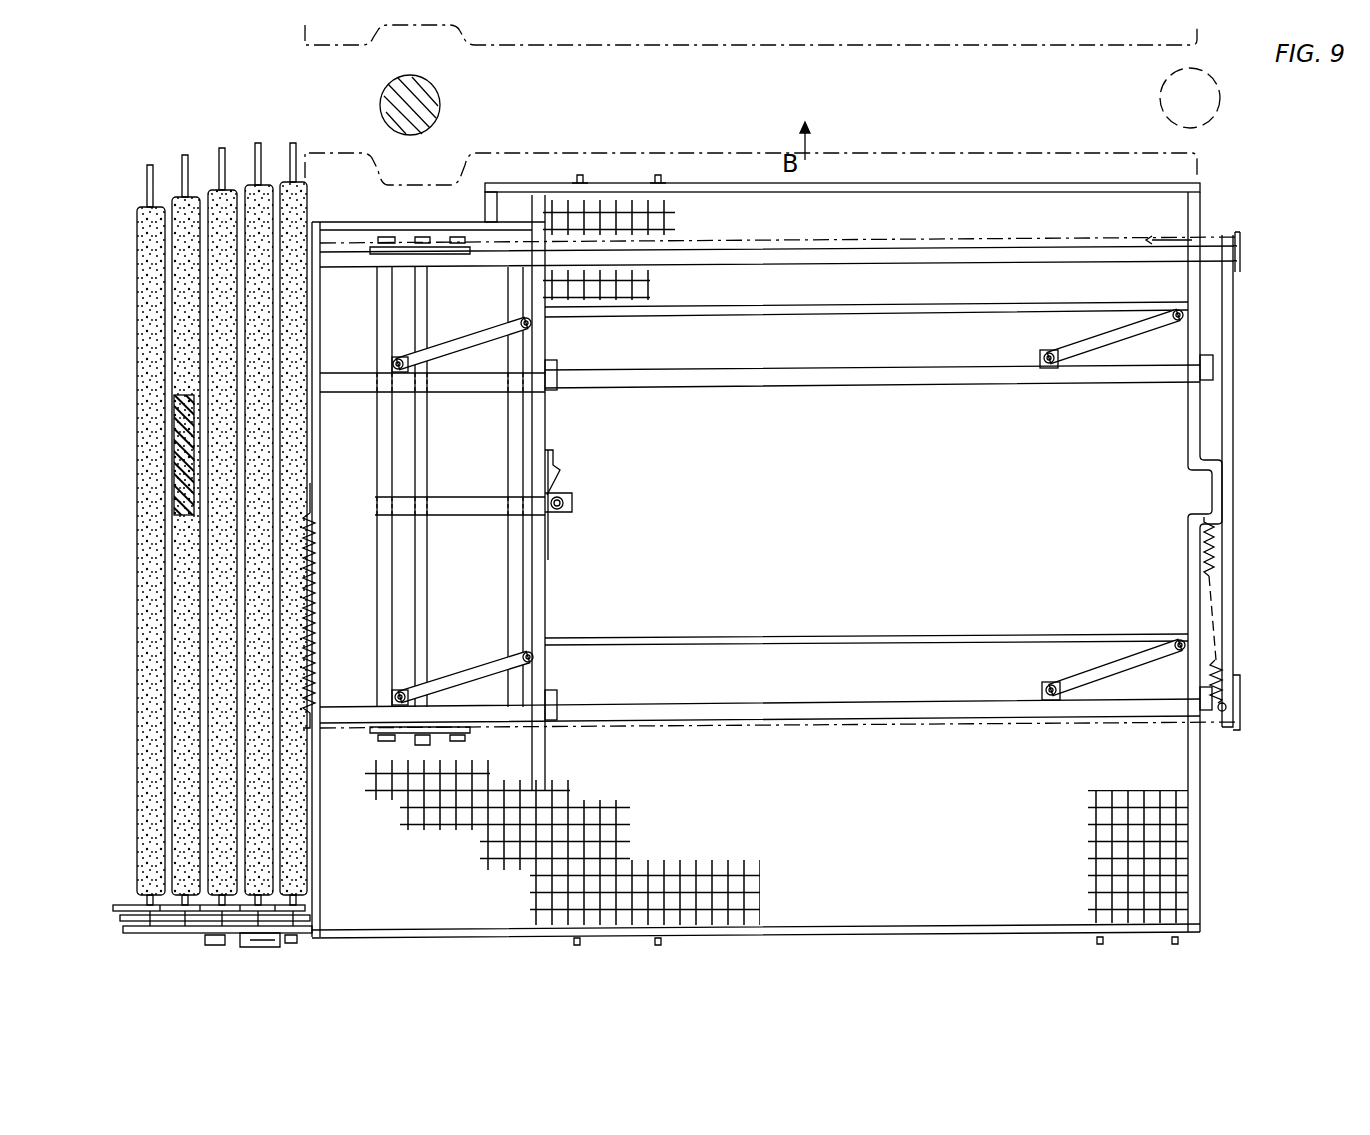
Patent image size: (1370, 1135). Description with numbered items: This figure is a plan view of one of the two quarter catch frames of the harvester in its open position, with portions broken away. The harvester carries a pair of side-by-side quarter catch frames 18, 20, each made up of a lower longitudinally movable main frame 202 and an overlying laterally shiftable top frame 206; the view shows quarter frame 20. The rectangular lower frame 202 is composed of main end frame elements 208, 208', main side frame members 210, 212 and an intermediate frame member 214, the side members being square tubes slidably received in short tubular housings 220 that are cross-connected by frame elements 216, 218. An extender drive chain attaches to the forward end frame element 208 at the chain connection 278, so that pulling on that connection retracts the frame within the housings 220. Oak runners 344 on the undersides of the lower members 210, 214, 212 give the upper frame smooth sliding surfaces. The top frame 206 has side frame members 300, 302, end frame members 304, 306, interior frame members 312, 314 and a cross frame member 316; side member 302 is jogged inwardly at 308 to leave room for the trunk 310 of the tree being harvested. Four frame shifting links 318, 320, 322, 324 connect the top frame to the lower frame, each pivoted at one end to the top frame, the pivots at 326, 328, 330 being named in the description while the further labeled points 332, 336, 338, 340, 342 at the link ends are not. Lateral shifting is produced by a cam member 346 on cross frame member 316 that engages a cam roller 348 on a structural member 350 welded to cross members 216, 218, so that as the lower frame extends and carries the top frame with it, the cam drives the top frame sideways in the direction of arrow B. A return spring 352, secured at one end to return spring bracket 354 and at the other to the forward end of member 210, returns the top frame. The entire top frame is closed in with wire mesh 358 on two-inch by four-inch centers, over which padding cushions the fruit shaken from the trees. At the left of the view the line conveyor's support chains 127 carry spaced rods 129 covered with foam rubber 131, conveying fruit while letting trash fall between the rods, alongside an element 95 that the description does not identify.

The quarter catch frame 18 is at (982, 48).
The quarter catch frame 20 is at (1215, 203).
The support member 95 is at (228, 940).
The conveyor support chain 127 is at (122, 904).
The spaced rods 129 is at (148, 172).
The foam rubber covering 131 is at (183, 172).
The lower longitudinally movable main frame 202 is at (1248, 348).
The laterally shiftable top frame 206 is at (1203, 200).
The main end frame element 208 is at (1271, 481).
The main end frame element 208' is at (428, 579).
The main side frame member 210 is at (1230, 706).
The main side frame member 212 is at (1035, 250).
The intermediate frame member 214 is at (680, 402).
The cross frame element 216 is at (378, 422).
The cross frame element 218 is at (508, 420).
The tubular housing 220 is at (490, 735).
The chain connection 278 is at (1235, 728).
The side frame member 300 is at (1190, 945).
The side frame member 302 is at (1022, 188).
The end frame member 304 is at (312, 488).
The end frame member 306 is at (1202, 892).
The inward jog 308 is at (456, 212).
The tree trunk 310 is at (442, 98).
The interior frame member 312 is at (785, 638).
The interior frame member 314 is at (792, 315).
The cross frame member 316 is at (548, 592).
The frame shifting link 318 is at (1098, 645).
The frame shifting link 320 is at (1097, 368).
The frame shifting link 322 is at (445, 340).
The frame shifting link 324 is at (500, 645).
The link pivot connection 326 is at (1180, 640).
The link pivot connection 328 is at (1180, 322).
The link pivot connection 330 is at (540, 330).
The pivot 332 is at (534, 655).
The pivot bracket 336 is at (1045, 690).
The pivot bracket 338 is at (1045, 355).
The pivot bracket 340 is at (392, 364).
The pivot bracket 342 is at (395, 697).
The runner 344 is at (790, 262).
The cam member 346 is at (560, 462).
The cam roller 348 is at (570, 497).
The structural member 350 is at (498, 500).
The return spring 352 is at (314, 625).
The return spring bracket 354 is at (1212, 540).
The wire mesh 358 is at (1168, 858).